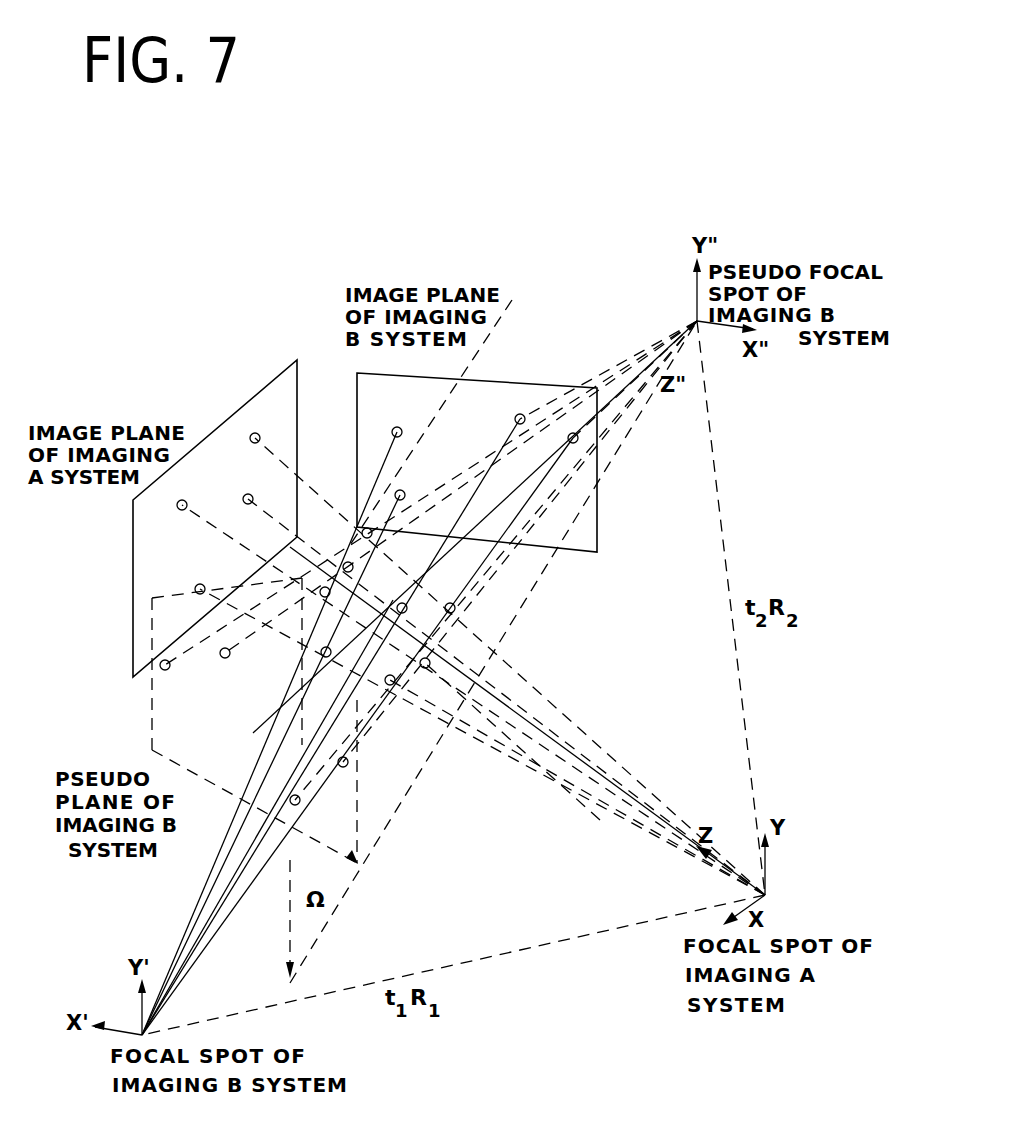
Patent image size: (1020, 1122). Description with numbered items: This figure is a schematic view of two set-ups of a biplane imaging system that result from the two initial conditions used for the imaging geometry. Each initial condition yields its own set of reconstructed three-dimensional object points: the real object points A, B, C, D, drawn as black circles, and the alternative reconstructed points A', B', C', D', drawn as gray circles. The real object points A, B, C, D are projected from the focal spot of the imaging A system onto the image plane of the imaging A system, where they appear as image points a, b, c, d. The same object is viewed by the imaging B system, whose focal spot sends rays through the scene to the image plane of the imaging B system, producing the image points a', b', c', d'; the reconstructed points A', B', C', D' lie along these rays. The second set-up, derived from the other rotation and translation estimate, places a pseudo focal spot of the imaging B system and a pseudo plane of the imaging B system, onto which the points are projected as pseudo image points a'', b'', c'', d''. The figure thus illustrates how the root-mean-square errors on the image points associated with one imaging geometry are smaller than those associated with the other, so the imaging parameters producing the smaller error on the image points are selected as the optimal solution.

The image point a is at (199, 598).
The image point b is at (183, 517).
The image point c is at (251, 510).
The image point d is at (257, 451).
The image point a' is at (386, 505).
The image point b' is at (402, 449).
The image point c' is at (526, 432).
The image point d' is at (575, 454).
The pseudo image point a'' is at (292, 813).
The pseudo image point b'' is at (345, 774).
The pseudo image point c'' is at (227, 663).
The pseudo image point d'' is at (170, 675).
The real 3-D object point A is at (318, 660).
The real 3-D object point B is at (325, 610).
The real 3-D object point C is at (351, 579).
The real 3-D object point D is at (365, 543).
The reconstructed 3-D object point A' is at (390, 680).
The reconstructed 3-D object point B' is at (425, 677).
The reconstructed 3-D object point C' is at (405, 620).
The reconstructed 3-D object point D' is at (445, 593).